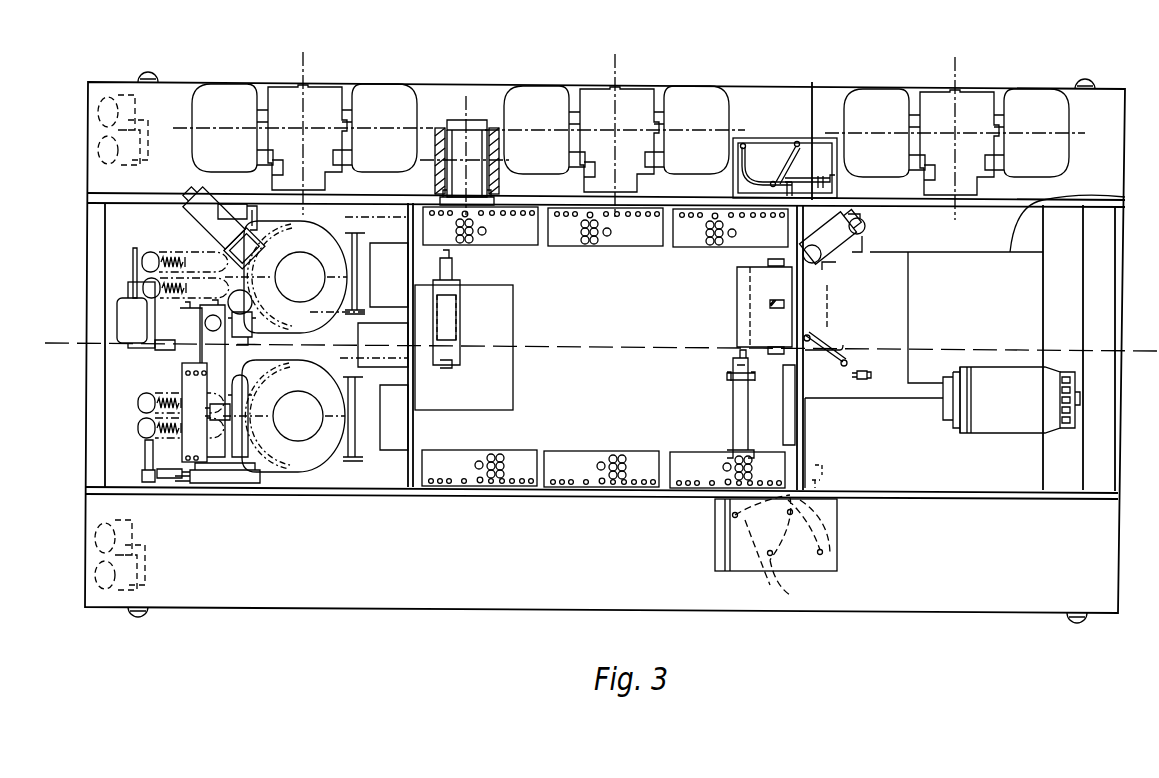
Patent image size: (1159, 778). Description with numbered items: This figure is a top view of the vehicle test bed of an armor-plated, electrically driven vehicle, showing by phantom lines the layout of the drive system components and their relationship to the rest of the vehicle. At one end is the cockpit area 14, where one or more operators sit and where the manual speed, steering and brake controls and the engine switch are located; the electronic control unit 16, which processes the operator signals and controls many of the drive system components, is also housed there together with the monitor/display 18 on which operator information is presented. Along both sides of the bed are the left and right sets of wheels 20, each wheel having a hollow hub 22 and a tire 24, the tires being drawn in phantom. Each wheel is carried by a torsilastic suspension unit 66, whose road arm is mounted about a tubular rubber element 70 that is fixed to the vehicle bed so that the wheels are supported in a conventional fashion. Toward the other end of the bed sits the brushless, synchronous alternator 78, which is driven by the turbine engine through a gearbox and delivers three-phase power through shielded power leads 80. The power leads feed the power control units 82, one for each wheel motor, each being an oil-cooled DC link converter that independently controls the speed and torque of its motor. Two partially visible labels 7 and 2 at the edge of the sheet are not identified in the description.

The cockpit area 14 is at (343, 210).
The electronic control unit 16 is at (373, 357).
The monitor/display 18 is at (113, 300).
The wheels 20 is at (305, 60).
The hollow hub 22 is at (308, 84).
The tire 24 is at (236, 85).
The suspension unit 66 is at (481, 106).
The rubber element 70 is at (436, 170).
The alternator 78 is at (1017, 434).
The power leads 80 is at (771, 180).
The power control units 82 is at (510, 246).
The frame member 7 is at (1125, 197).
The machine 2 is at (1130, 347).